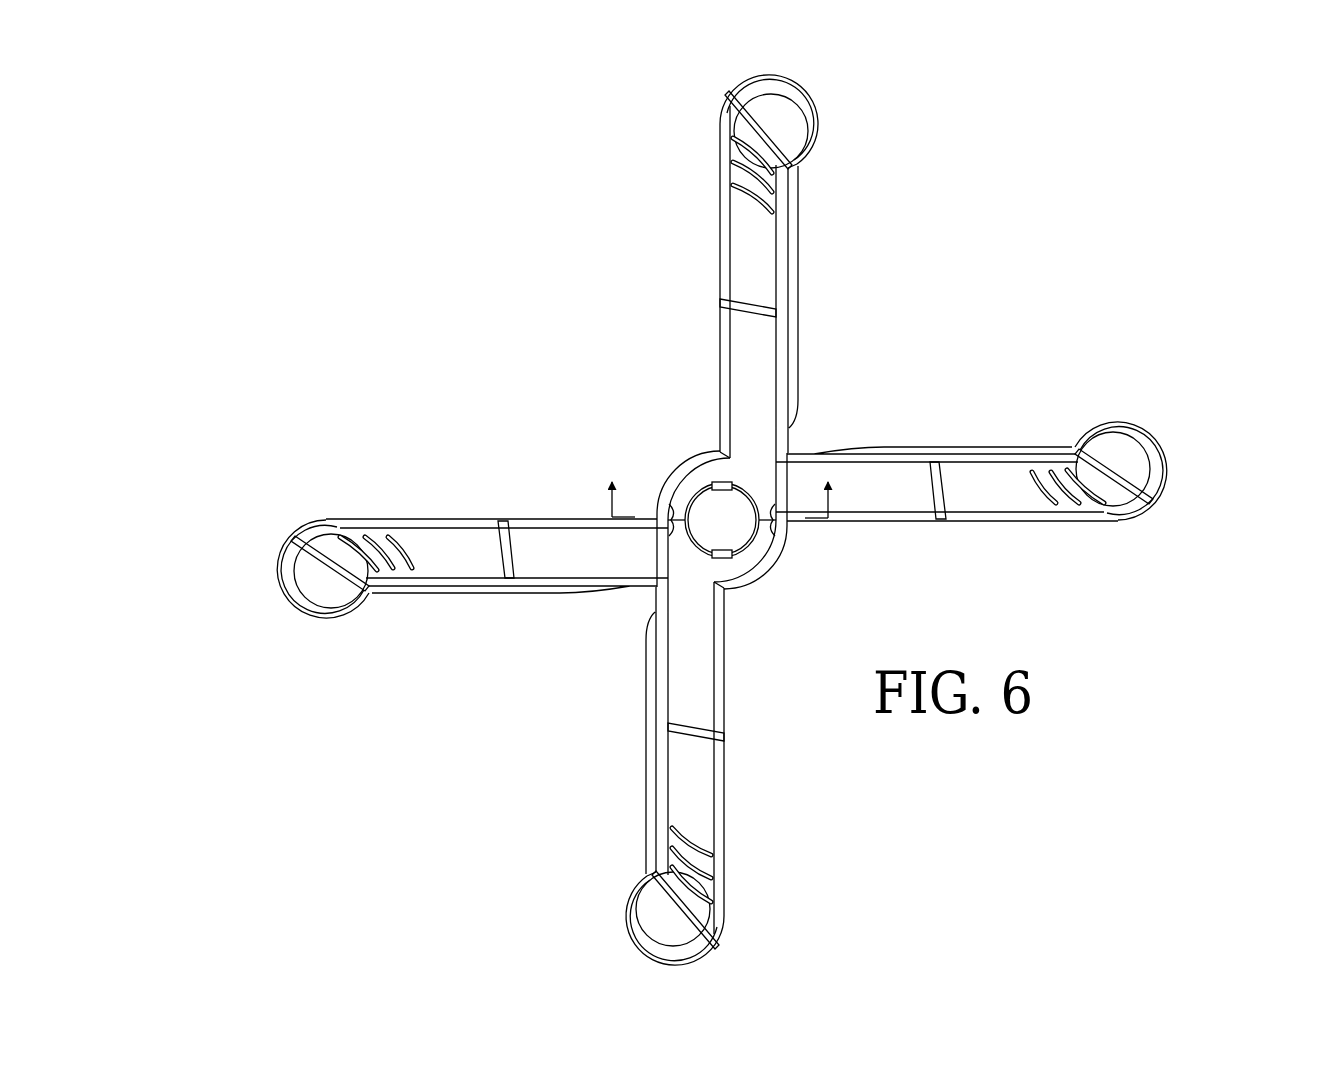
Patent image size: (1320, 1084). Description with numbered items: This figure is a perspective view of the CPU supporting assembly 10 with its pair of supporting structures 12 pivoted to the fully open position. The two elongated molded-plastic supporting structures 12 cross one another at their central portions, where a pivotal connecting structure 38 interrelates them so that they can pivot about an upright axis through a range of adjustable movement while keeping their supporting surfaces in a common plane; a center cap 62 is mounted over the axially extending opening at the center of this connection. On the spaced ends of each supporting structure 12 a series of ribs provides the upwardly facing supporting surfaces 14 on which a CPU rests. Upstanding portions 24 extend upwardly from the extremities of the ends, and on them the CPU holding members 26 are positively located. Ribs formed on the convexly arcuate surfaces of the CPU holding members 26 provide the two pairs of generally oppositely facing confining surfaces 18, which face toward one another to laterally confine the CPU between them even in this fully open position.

The CPU supporting assembly 10 is at (733, 515).
The supporting structures 12 is at (780, 385).
The upwardly facing supporting surfaces 14 is at (737, 141).
The confining surfaces 18 is at (742, 125).
The upstanding portions 24 is at (834, 96).
The CPU holding members 26 is at (777, 150).
The pivotal connecting structure 38 is at (689, 453).
The center cap 62 is at (748, 528).